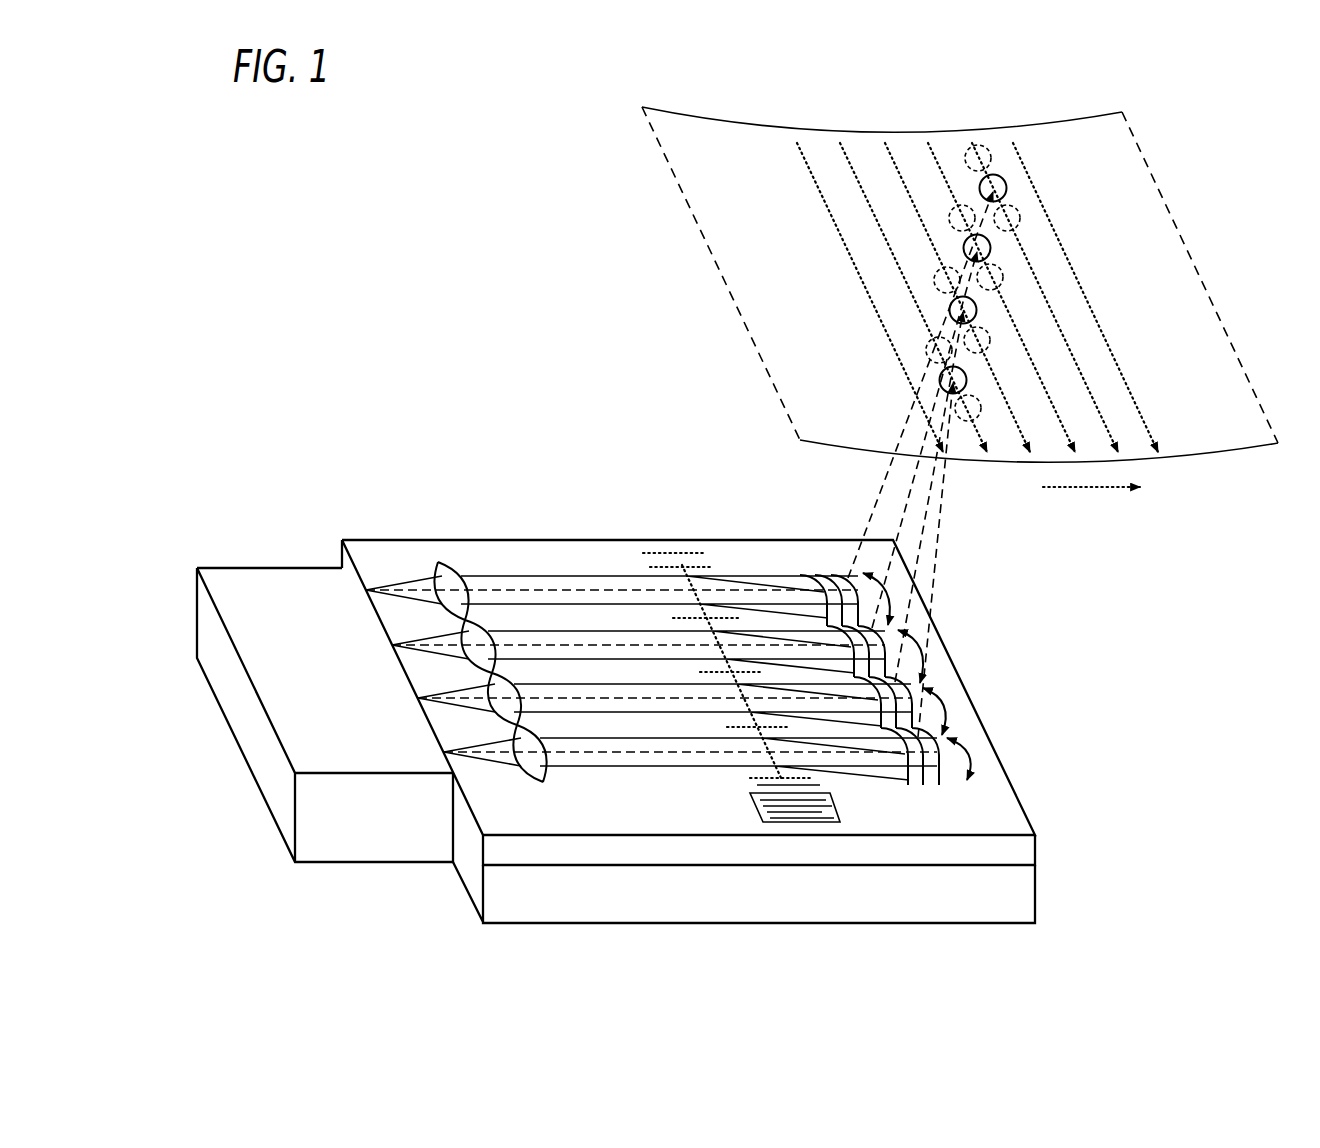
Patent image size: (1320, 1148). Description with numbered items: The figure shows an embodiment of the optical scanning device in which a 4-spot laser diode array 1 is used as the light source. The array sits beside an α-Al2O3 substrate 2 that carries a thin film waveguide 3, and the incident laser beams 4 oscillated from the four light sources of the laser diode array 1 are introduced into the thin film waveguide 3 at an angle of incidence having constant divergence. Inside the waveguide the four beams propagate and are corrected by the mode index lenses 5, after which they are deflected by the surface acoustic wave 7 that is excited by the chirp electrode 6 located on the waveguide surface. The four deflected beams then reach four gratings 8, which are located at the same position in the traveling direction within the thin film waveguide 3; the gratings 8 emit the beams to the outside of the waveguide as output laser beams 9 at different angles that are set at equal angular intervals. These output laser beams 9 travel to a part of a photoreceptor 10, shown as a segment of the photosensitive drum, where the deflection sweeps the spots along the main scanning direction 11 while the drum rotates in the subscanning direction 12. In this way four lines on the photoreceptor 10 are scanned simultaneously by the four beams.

The 4-spot laser diode array 1 is at (325, 701).
The α-Al2O3 substrate 2 is at (744, 892).
The thin film waveguide 3 is at (688, 703).
The incident laser beams 4 is at (473, 758).
The mode index lenses 5 is at (542, 785).
The chirp electrode 6 is at (750, 800).
The surface acoustic wave 7 is at (688, 562).
The gratings 8 is at (930, 785).
The output laser beams 9 is at (948, 503).
The part of a photoreceptor 10 is at (960, 284).
The main scanning direction 11 is at (943, 168).
The subscanning direction 12 is at (1121, 487).